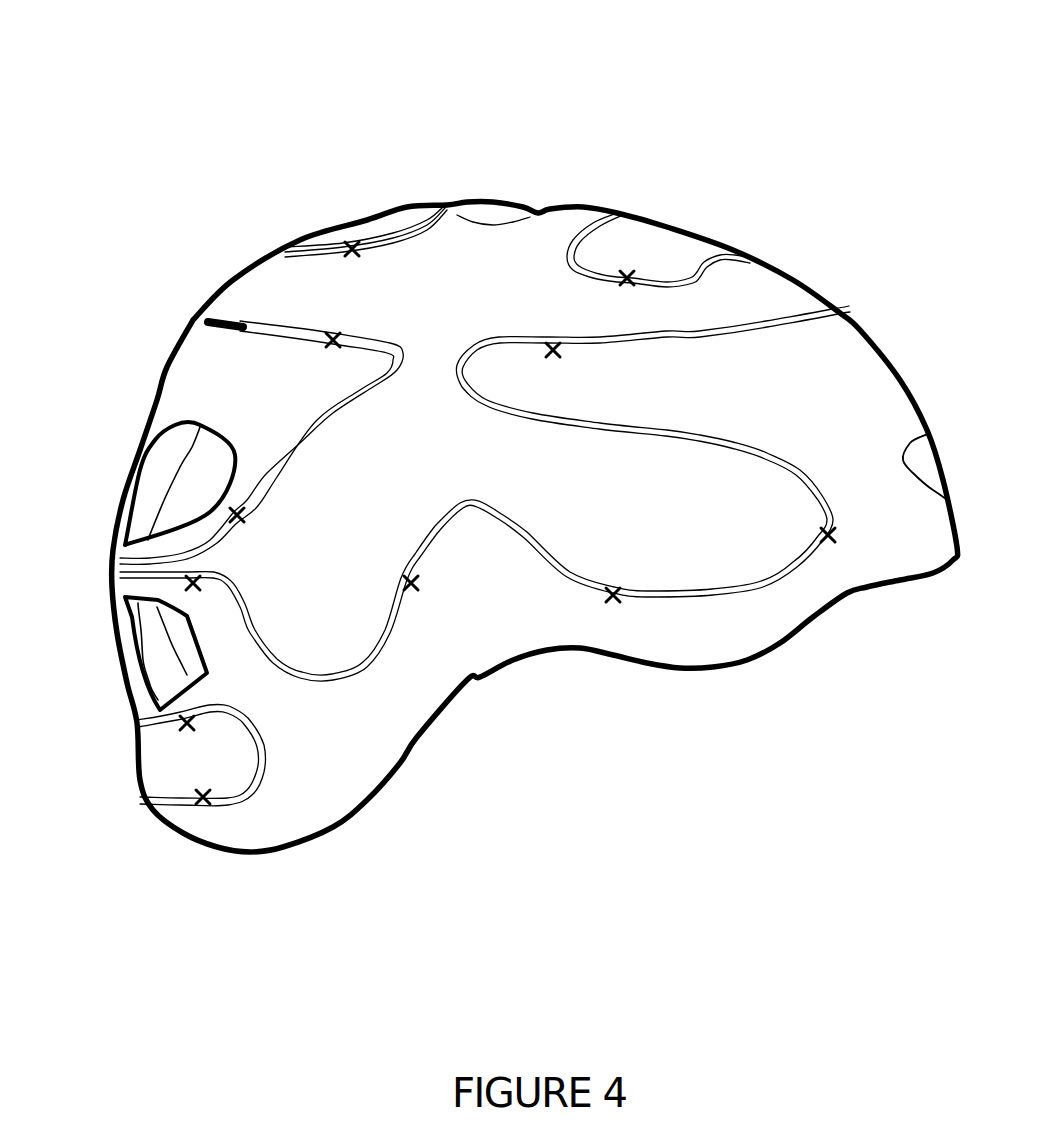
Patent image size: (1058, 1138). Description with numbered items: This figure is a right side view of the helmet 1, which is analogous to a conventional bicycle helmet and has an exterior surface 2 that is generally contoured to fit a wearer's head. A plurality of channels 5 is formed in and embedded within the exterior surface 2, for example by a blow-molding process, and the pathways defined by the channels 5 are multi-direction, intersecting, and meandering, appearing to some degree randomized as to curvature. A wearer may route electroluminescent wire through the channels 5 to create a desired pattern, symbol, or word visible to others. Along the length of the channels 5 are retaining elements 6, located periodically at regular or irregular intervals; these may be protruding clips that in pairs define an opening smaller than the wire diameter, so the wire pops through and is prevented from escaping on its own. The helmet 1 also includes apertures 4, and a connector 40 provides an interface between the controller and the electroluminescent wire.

The helmet 1 is at (831, 78).
The exterior surface 2 is at (328, 737).
The apertures 4 is at (162, 482).
The channels 5 is at (408, 238).
The retaining elements 6 is at (636, 274).
The connector 40 is at (228, 318).